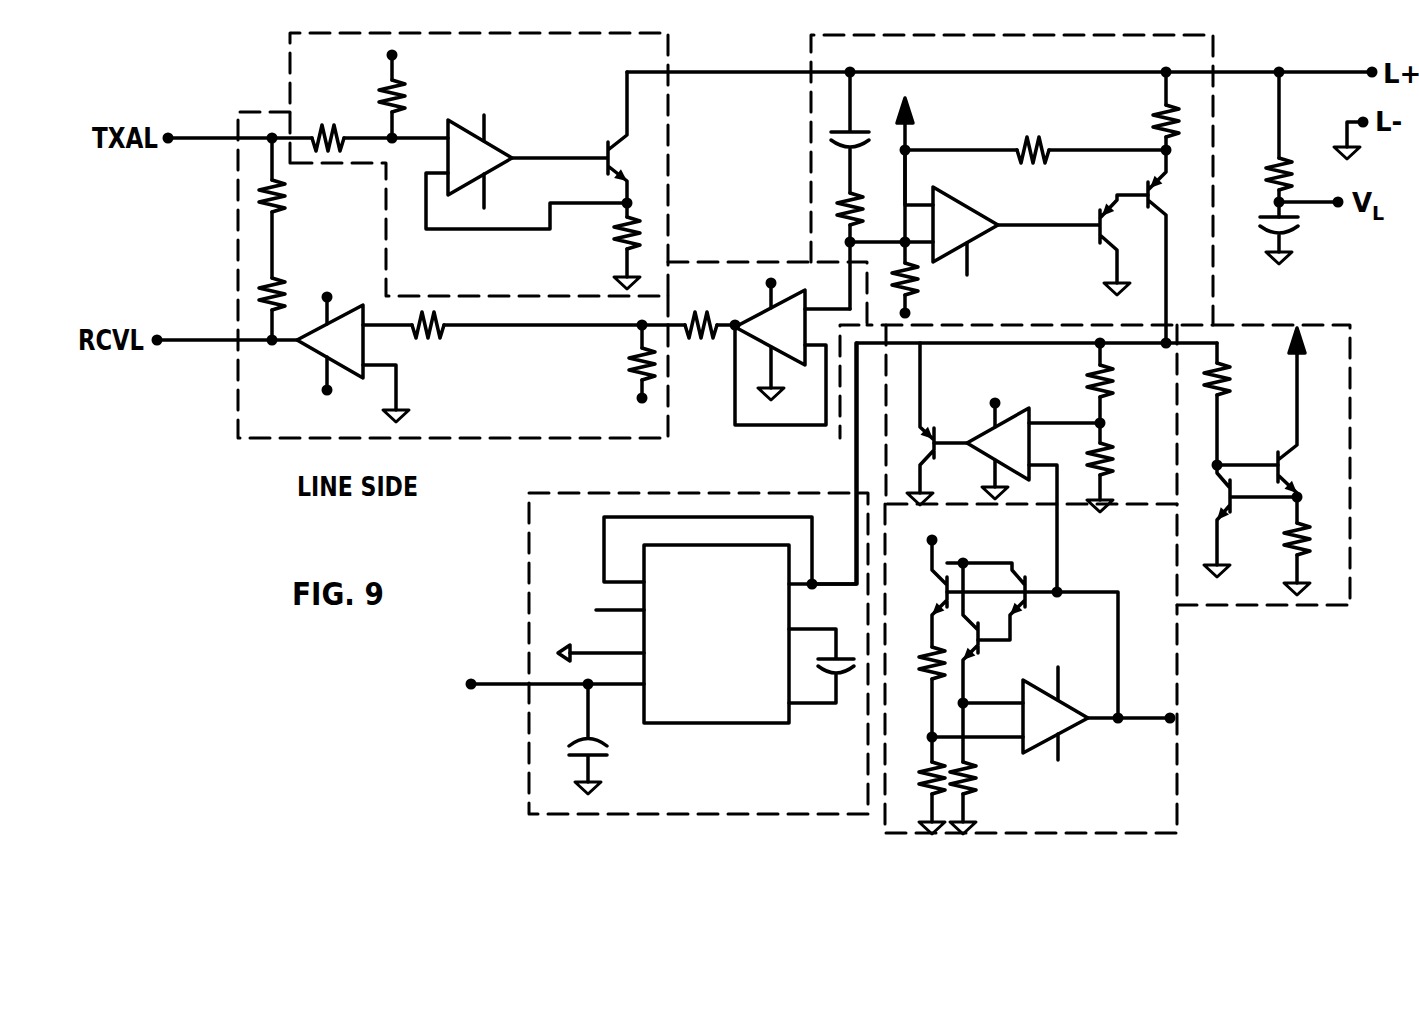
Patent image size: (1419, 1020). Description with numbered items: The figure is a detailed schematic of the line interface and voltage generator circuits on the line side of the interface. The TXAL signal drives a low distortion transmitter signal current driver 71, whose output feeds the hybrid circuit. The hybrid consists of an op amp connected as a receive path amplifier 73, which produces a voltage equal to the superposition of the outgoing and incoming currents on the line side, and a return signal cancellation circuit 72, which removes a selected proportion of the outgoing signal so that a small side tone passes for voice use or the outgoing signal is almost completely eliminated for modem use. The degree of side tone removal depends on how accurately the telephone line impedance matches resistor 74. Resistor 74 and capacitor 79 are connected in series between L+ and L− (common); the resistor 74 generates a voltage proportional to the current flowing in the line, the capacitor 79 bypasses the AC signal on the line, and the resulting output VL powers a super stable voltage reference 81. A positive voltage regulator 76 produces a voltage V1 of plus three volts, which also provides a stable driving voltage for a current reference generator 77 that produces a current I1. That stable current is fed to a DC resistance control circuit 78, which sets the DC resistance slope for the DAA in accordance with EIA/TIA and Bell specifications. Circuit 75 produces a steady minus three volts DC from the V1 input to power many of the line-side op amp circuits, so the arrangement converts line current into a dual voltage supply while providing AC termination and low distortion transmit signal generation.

The transmitter signal current driver 71 is at (549, 102).
The return signal cancellation circuit 72 is at (337, 253).
The receive path amplifier 73 is at (725, 397).
The resistor 74 is at (1275, 160).
The negative voltage circuit 75 is at (710, 780).
The positive voltage regulator 76 is at (977, 399).
The current reference generator 77 is at (1277, 421).
The DC resistance control circuit 78 is at (1007, 112).
The capacitor 79 is at (1299, 224).
The super stable voltage reference 81 is at (1117, 787).